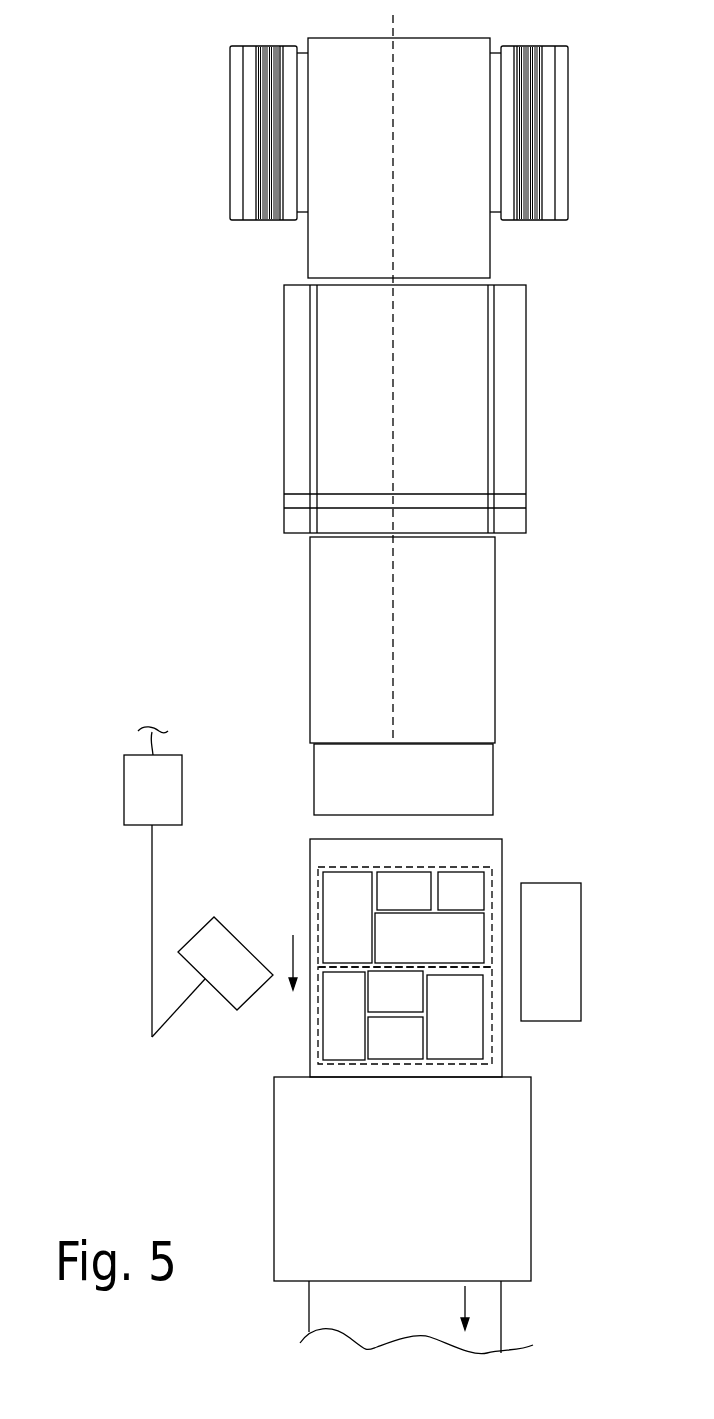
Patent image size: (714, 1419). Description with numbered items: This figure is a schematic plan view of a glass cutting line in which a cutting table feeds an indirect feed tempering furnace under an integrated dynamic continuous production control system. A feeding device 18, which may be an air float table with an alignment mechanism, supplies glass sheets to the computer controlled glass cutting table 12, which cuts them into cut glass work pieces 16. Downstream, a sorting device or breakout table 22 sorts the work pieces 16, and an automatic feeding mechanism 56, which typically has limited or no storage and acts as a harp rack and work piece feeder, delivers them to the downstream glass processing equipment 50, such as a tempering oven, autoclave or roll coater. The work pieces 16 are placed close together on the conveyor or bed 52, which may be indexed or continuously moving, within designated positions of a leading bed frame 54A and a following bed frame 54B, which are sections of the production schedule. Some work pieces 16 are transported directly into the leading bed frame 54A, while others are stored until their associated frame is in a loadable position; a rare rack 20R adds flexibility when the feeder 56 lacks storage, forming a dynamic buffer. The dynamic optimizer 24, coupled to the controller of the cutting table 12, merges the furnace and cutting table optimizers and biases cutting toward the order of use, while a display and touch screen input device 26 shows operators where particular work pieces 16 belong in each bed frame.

The glass cutting table 12 is at (375, 407).
The cut glass work pieces 16 is at (330, 926).
The feeding device 18 is at (375, 164).
The rare rack 20R is at (578, 942).
The sorting device or breakout table 22 is at (371, 647).
The dynamic optimizer 24 is at (134, 796).
The display and touch screen input device 26 is at (203, 974).
The downstream glass processing equipment 50 is at (377, 1151).
The conveyor or bed 52 is at (318, 850).
The leading bed frame 54A is at (318, 1063).
The bed frame 54B is at (318, 885).
The automatic feeding mechanism 56 is at (370, 801).